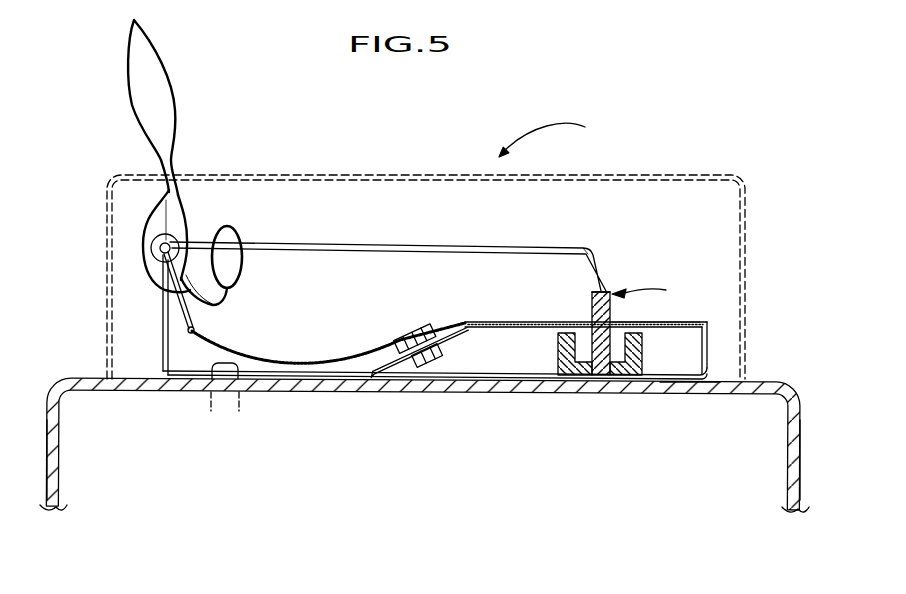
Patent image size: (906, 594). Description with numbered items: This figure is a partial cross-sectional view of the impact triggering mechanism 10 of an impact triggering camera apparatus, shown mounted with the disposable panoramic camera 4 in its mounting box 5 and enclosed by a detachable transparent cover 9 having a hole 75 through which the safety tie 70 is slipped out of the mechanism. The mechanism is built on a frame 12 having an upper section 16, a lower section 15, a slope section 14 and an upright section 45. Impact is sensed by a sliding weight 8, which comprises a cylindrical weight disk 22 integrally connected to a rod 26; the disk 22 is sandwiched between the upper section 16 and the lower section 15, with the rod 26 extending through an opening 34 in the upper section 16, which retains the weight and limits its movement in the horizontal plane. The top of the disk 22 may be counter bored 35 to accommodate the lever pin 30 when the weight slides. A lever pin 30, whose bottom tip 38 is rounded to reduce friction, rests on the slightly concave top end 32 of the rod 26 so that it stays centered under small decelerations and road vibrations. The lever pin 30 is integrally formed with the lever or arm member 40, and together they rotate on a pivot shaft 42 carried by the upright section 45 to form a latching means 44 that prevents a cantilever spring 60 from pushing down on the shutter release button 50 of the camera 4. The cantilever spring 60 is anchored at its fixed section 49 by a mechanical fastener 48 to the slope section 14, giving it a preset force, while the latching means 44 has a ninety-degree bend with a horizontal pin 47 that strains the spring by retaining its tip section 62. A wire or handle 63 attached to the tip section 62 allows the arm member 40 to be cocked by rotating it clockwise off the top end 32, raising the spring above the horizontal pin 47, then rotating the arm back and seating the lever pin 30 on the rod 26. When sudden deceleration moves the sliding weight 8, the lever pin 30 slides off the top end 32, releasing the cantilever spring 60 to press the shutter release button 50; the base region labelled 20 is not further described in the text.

The disposable panoramic camera 4 is at (808, 460).
The mounting box 5 is at (43, 445).
The sliding weight 8 is at (646, 293).
The cover 9 is at (380, 175).
The impact triggering mechanism 10 is at (558, 140).
The frame 12 is at (707, 341).
The slope section 14 is at (400, 373).
The lower section 15 is at (445, 378).
The upper section 16 is at (515, 328).
The base bottom 20 is at (687, 393).
The cylindrical weight disk 22 is at (662, 350).
The rod 26 is at (591, 294).
The lever pin 30 is at (597, 268).
The top end 32 is at (610, 286).
The opening 34 is at (622, 320).
The counter bore 35 is at (560, 350).
The bottom tip 38 is at (600, 284).
The lever or arm member 40 is at (372, 244).
The pivot shaft 42 is at (155, 243).
The latching means 44 is at (193, 274).
The upright section 45 is at (160, 320).
The horizontal pin 47 is at (188, 333).
The mechanical fastener 48 is at (405, 325).
The fixed section 49 is at (452, 322).
The shutter release button 50 is at (217, 393).
The cantilever spring 60 is at (361, 357).
The tip section 62 is at (217, 327).
The wire or handle 63 is at (236, 234).
The safety tie 70 is at (128, 64).
The hole 75 is at (177, 195).